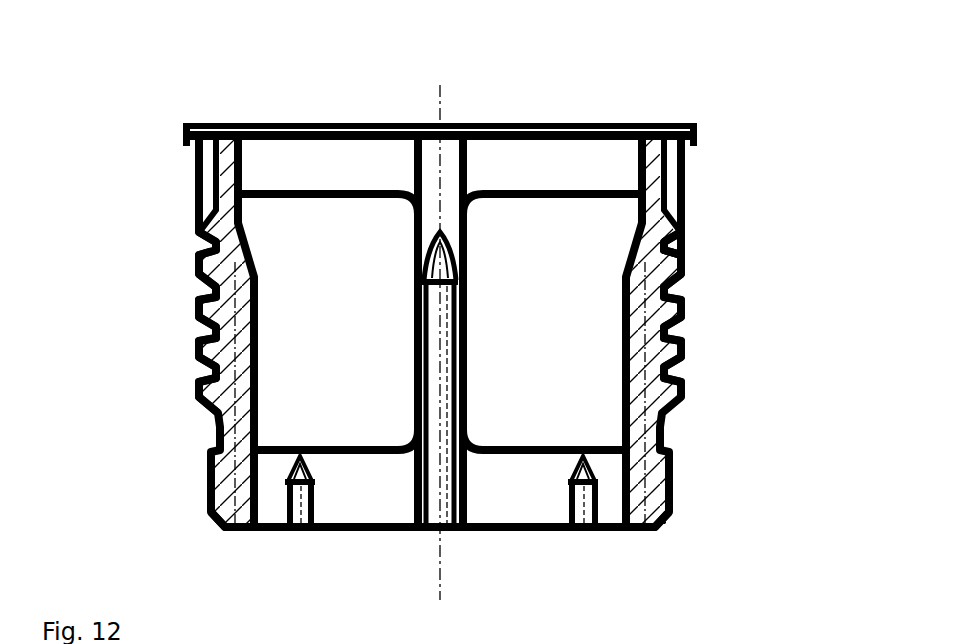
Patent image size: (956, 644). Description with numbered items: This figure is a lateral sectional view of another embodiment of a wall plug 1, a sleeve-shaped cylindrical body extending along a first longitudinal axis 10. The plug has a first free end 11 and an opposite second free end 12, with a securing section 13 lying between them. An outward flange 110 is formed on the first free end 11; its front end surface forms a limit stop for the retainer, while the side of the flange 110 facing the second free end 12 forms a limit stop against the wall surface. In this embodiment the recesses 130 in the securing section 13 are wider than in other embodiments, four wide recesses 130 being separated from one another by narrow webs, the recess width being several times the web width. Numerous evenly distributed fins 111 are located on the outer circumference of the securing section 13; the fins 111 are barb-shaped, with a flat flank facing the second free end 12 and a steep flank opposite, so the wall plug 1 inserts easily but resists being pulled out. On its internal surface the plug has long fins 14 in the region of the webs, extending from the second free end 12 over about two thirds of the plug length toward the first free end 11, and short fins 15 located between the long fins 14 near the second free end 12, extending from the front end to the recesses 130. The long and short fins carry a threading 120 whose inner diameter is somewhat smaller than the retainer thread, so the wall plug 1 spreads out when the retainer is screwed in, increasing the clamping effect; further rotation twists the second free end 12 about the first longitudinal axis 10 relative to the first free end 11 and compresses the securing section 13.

The wall plug 1 is at (104, 56).
The first longitudinal axis 10 is at (443, 98).
The first free end 11 is at (749, 99).
The second free end 12 is at (744, 547).
The securing section 13 is at (750, 321).
The long fins 14 is at (424, 462).
The short fins 15 is at (577, 530).
The flange 110 is at (185, 127).
The fins 111 is at (197, 226).
The threading 120 is at (302, 530).
The recesses 130 is at (330, 327).